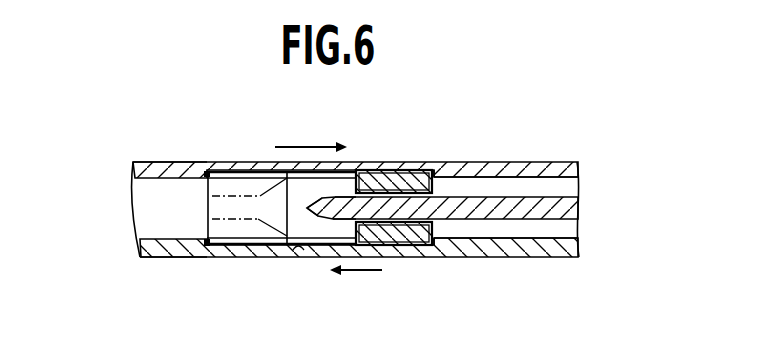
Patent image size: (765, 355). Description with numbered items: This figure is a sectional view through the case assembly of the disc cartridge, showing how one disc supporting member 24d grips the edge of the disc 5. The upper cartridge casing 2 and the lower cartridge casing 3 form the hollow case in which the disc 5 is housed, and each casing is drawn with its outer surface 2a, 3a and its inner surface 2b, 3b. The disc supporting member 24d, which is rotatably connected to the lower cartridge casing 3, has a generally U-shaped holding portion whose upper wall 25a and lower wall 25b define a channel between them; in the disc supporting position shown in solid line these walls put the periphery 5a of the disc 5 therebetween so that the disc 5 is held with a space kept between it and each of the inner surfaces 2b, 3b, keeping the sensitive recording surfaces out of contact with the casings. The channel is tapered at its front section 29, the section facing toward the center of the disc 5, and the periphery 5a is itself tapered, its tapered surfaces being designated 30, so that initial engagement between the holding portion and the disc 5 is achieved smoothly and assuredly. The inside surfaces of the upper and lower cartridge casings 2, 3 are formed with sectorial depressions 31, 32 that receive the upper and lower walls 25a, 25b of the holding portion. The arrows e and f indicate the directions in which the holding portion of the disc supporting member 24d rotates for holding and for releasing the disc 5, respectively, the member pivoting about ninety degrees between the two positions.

The upper cartridge casing 2 is at (133, 164).
The upper tube outer surface 2a is at (163, 162).
The inner surface of upper cartridge casing 2b is at (532, 178).
The lower cartridge casing 3 is at (136, 252).
The lower tube outer surface 3a is at (160, 257).
The inner surface of lower cartridge casing 3b is at (503, 236).
The disc 5 is at (557, 207).
The periphery of the disc 5a is at (346, 206).
The disc supporting member 24d is at (436, 167).
The upper wall of holding portion 25a is at (232, 185).
The lower wall of holding portion 25b is at (223, 246).
The tapered front section 29 is at (428, 193).
The tapered surfaces 30 is at (317, 200).
The sectorial depression 31 is at (259, 177).
The sectorial depression 32 is at (309, 257).
The arrow e is at (311, 133).
The arrow f is at (357, 273).